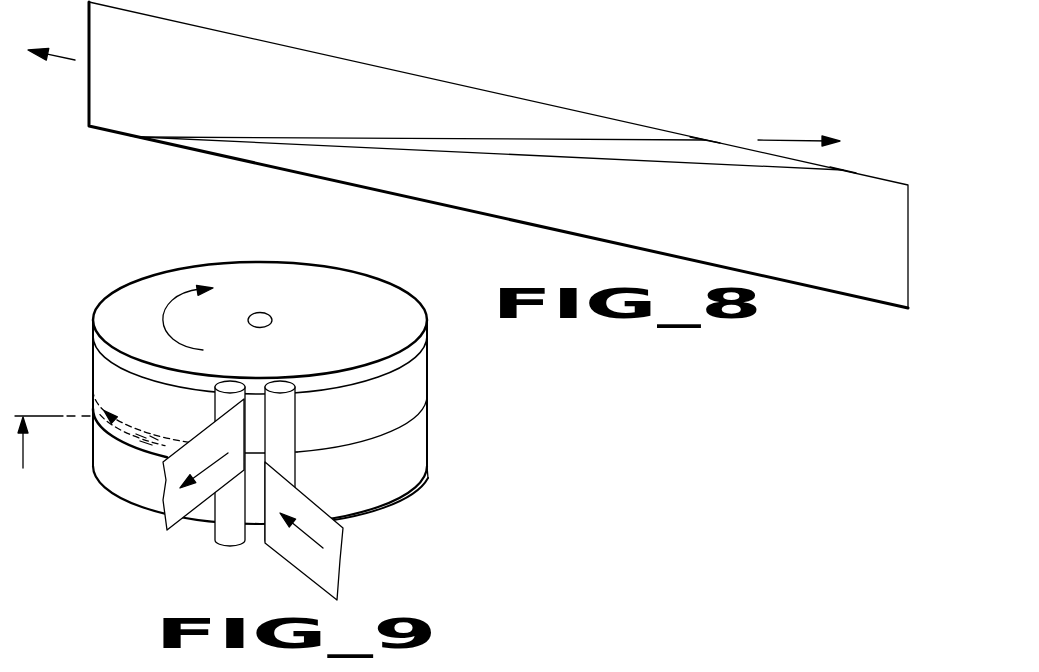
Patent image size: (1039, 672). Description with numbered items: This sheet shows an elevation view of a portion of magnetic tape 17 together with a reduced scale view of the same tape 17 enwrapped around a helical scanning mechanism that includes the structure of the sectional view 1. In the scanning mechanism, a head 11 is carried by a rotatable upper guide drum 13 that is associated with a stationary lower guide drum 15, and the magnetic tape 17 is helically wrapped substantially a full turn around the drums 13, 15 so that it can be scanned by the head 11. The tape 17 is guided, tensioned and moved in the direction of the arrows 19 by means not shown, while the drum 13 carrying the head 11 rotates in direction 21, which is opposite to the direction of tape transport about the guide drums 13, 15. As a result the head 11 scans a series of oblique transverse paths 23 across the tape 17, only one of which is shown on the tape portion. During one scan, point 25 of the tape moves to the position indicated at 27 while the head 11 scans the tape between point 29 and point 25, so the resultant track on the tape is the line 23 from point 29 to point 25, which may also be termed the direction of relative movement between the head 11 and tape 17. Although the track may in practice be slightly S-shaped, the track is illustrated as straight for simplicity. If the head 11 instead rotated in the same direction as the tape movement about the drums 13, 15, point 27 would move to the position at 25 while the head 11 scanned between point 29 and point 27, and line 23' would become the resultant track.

In FIG. 9, the viewing direction arrow 1 is at (52, 442).
In FIG. 9, the head 11 is at (149, 437).
In FIG. 9, the upper guide drum 13 is at (378, 274).
In FIG. 9, the lower guide drum 15 is at (418, 487).
In FIG. 8, the magnetic tape 17 is at (383, 67).
In FIG. 9, the magnetic tape 17 is at (340, 548).
In FIG. 8, the arrows 19 is at (67, 58).
In FIG. 9, the arrows 19 is at (212, 470).
In FIG. 8, the direction 21 is at (769, 140).
In FIG. 9, the direction 21 is at (162, 316).
In FIG. 8, the oblique transverse path 23 is at (491, 174).
In FIG. 8, the line 23' is at (422, 119).
In FIG. 8, the point 25 is at (843, 170).
In FIG. 8, the position 27 is at (705, 140).
In FIG. 8, the point 29 is at (138, 137).